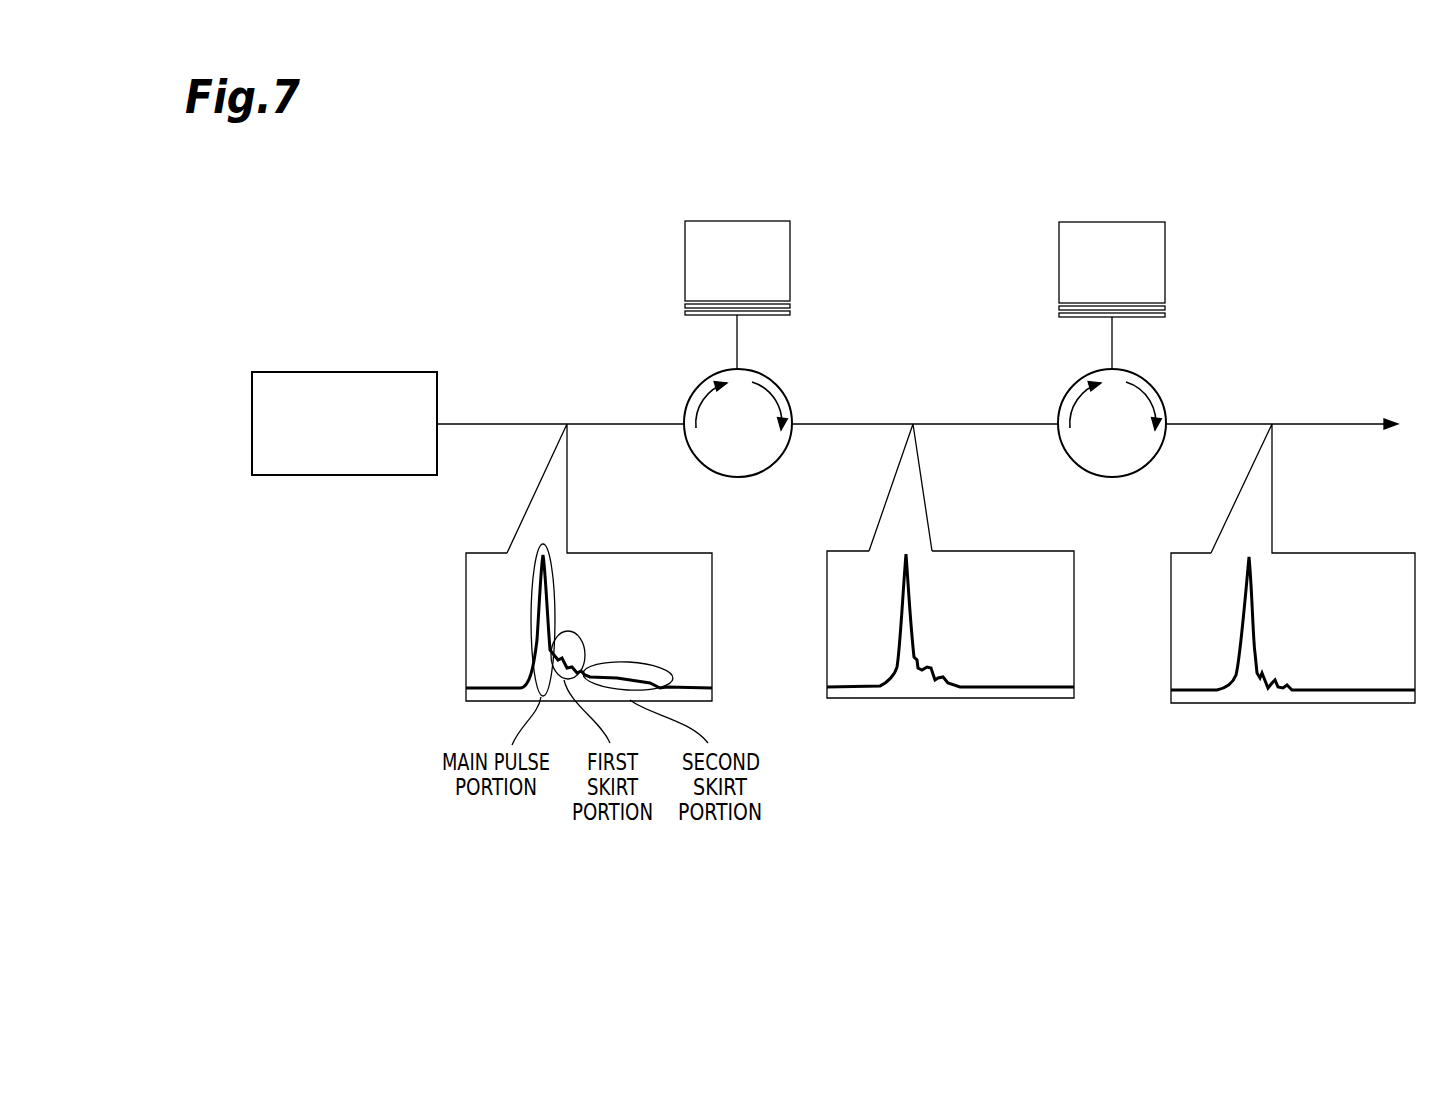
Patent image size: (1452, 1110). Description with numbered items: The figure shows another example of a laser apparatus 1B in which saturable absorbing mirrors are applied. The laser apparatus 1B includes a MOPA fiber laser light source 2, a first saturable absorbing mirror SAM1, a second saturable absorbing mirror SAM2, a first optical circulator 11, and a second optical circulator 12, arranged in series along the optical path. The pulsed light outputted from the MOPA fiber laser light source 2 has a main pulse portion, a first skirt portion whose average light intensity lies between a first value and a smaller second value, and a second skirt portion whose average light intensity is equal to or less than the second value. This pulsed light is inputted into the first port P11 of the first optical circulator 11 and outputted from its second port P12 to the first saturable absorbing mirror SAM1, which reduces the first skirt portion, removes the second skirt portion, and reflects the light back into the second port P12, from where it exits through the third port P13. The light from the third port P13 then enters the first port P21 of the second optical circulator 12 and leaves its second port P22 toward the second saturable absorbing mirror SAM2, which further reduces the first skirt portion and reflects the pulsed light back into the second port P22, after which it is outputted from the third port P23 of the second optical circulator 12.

The laser apparatus 1B is at (1244, 210).
The MOPA fiber laser light source 2 is at (345, 372).
The first optical circulator 11 is at (741, 399).
The second optical circulator 12 is at (1113, 399).
The first saturable absorbing mirror SAM1 is at (740, 221).
The second saturable absorbing mirror SAM2 is at (1117, 222).
The first port P11 is at (658, 410).
The second port P12 is at (707, 355).
The third port P13 is at (822, 410).
The first port P21 is at (1030, 410).
The second port P22 is at (1080, 357).
The third port P23 is at (1194, 410).